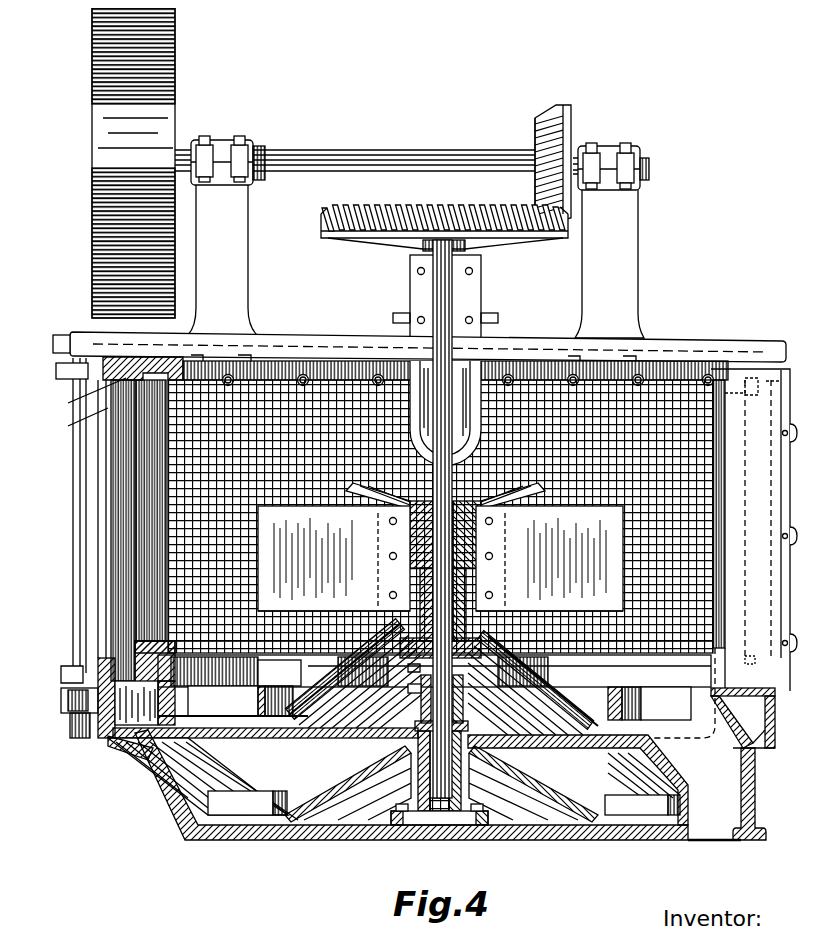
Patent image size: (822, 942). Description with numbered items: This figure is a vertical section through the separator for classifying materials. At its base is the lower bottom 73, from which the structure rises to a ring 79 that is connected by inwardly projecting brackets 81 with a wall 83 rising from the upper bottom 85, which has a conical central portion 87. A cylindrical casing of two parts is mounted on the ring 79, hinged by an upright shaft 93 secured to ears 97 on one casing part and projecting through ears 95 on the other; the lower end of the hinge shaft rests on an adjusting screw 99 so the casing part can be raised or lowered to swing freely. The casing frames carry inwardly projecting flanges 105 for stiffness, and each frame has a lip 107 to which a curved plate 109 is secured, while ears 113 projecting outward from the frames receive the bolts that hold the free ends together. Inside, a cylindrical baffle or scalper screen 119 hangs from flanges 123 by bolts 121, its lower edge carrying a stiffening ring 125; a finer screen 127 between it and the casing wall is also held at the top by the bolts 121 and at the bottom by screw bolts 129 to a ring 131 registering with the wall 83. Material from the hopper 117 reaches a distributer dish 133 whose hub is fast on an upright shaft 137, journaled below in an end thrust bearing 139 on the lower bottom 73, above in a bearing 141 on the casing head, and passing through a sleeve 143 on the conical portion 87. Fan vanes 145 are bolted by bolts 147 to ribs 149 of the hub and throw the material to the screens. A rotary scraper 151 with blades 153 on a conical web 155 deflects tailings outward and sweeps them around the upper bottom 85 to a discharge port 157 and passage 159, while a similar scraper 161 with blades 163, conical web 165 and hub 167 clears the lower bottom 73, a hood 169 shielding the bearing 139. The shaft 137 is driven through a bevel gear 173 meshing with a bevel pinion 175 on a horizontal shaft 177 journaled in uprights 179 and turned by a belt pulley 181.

The lower bottom 73 is at (298, 832).
The ring 79 is at (760, 712).
The brackets 81 is at (104, 733).
The wall 83 is at (738, 718).
The upper bottom 85 is at (218, 732).
The conical central portion 87 is at (385, 690).
The upright shaft 93 is at (72, 552).
The ears 95 is at (80, 362).
The ears 97 is at (58, 327).
The adjusting screw 99 is at (64, 730).
The flanges 105 is at (752, 482).
The lip 107 is at (790, 383).
The curved plate 109 is at (78, 422).
The ears 113 is at (797, 635).
The hopper 117 is at (470, 330).
The baffle or scalper screen 119 is at (250, 362).
The bolts 121 is at (297, 366).
The flanges 123 is at (150, 362).
The stiffening ring 125 is at (165, 625).
The finer screen 127 is at (130, 500).
The screw bolts 129 is at (130, 640).
The ring 131 is at (135, 650).
The dish 133 is at (445, 492).
The upright shaft 137 is at (436, 308).
The end thrust bearing 139 is at (408, 772).
The bearing 141 is at (462, 278).
The sleeve 143 is at (458, 570).
The vanes 145 is at (440, 558).
The bolts 147 is at (485, 513).
The ribs 149 is at (380, 612).
The rotary scraper 151 is at (300, 665).
The blades 153 is at (210, 680).
The conical web 155 is at (336, 660).
The discharge port 157 is at (672, 738).
The discharge passage 159 is at (738, 792).
The scraper 161 is at (322, 752).
The blades 163 is at (226, 788).
The conical web 165 is at (356, 746).
The hub 167 is at (455, 690).
The hood 169 is at (468, 740).
The bevel gear 173 is at (316, 208).
The bevel pinion 175 is at (535, 100).
The horizontal shaft 177 is at (368, 150).
The uprights 179 is at (238, 252).
The pulley 181 is at (170, 92).